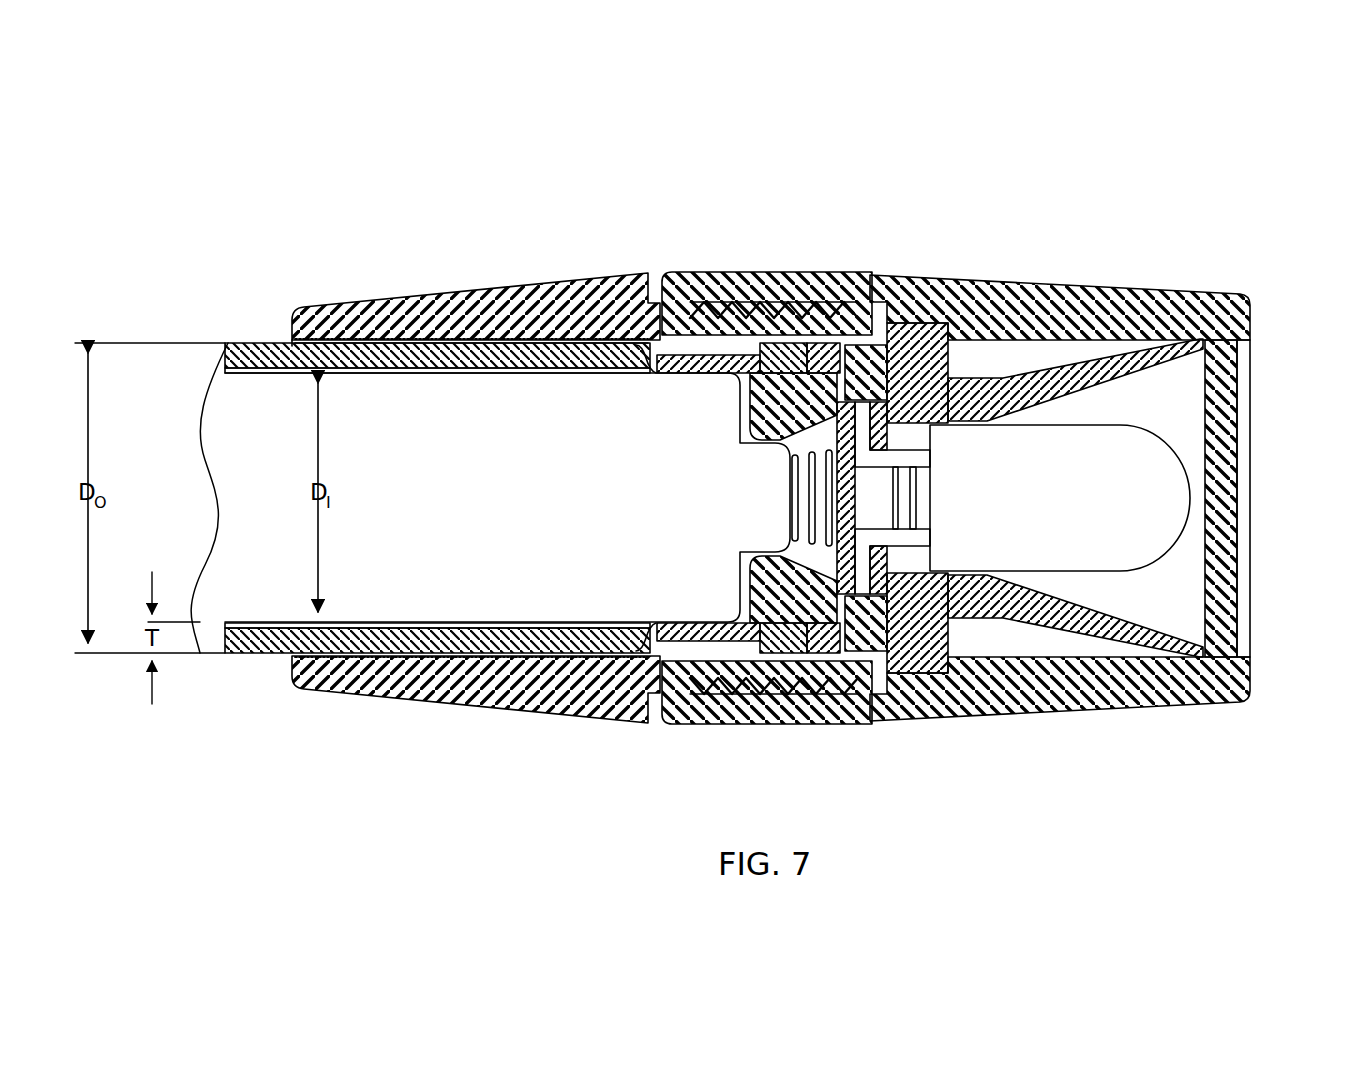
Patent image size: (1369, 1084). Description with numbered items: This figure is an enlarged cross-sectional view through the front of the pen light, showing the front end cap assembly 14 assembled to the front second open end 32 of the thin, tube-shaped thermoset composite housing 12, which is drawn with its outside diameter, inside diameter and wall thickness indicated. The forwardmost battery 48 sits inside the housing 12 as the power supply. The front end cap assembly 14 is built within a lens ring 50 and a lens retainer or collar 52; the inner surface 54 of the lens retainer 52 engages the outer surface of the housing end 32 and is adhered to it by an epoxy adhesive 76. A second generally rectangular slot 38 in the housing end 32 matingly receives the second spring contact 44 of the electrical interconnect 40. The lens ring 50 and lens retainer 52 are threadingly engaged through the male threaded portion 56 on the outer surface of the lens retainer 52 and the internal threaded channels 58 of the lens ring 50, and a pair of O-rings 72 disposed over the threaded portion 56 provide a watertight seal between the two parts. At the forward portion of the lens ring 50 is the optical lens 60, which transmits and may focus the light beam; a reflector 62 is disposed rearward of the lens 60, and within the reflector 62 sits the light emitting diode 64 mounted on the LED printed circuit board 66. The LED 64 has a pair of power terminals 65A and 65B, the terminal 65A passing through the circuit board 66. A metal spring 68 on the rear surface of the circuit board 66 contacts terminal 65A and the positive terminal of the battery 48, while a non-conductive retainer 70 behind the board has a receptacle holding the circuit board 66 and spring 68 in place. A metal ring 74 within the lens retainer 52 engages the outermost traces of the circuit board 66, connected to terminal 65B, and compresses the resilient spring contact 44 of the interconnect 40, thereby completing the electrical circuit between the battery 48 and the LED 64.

The housing 12 is at (248, 340).
The front end cap assembly 14 is at (1148, 225).
The front second open end 32 is at (755, 312).
The second generally rectangular slot 38 is at (622, 278).
The electrical interconnect 40 is at (425, 338).
The second spring contact 44 is at (738, 300).
The forwardmost battery 48 is at (483, 497).
The lens ring 50 is at (1190, 294).
The lens retainer 52 is at (478, 290).
The inner surface 54 is at (292, 338).
The threaded portion 56 is at (867, 277).
The internal threaded channels 58 is at (640, 352).
The optical lens 60 is at (1240, 366).
The reflector 62 is at (1042, 365).
The light emitting diode 64 is at (1160, 528).
The power terminal 65A is at (903, 533).
The power terminal 65B is at (917, 450).
The LED printed circuit board 66 is at (855, 715).
The metal spring 68 is at (797, 337).
The retainer 70 is at (885, 710).
The O-rings 72 is at (700, 712).
The metal ring 74 is at (830, 706).
The epoxy adhesive 76 is at (330, 337).